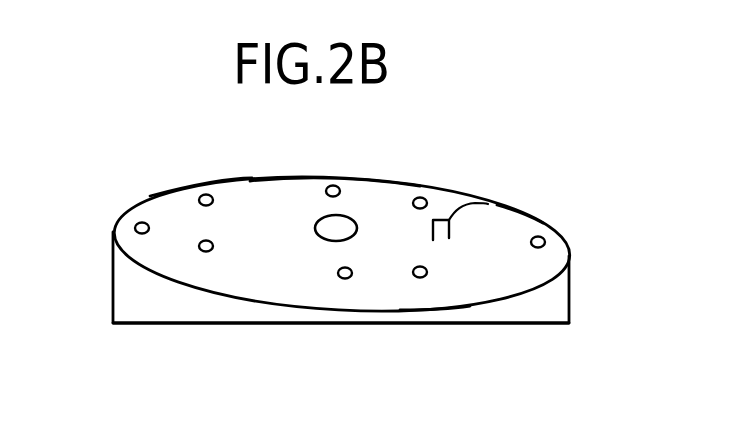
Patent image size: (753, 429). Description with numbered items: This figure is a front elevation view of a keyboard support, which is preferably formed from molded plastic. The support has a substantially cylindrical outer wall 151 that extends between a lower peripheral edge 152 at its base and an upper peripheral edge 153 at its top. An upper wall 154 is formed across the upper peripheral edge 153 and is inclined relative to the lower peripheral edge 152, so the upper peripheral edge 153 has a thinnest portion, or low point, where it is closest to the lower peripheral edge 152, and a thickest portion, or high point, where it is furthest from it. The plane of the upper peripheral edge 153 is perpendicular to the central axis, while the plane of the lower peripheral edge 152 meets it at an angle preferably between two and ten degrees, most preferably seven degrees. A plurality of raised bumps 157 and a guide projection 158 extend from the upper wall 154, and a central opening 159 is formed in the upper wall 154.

The outer wall 151 is at (568, 292).
The lower peripheral edge 152 is at (513, 323).
The upper peripheral edge 153 is at (437, 190).
The upper wall 154 is at (517, 237).
The raised bumps 157 is at (201, 241).
The guide projection 158 is at (520, 216).
The central opening 159 is at (350, 218).